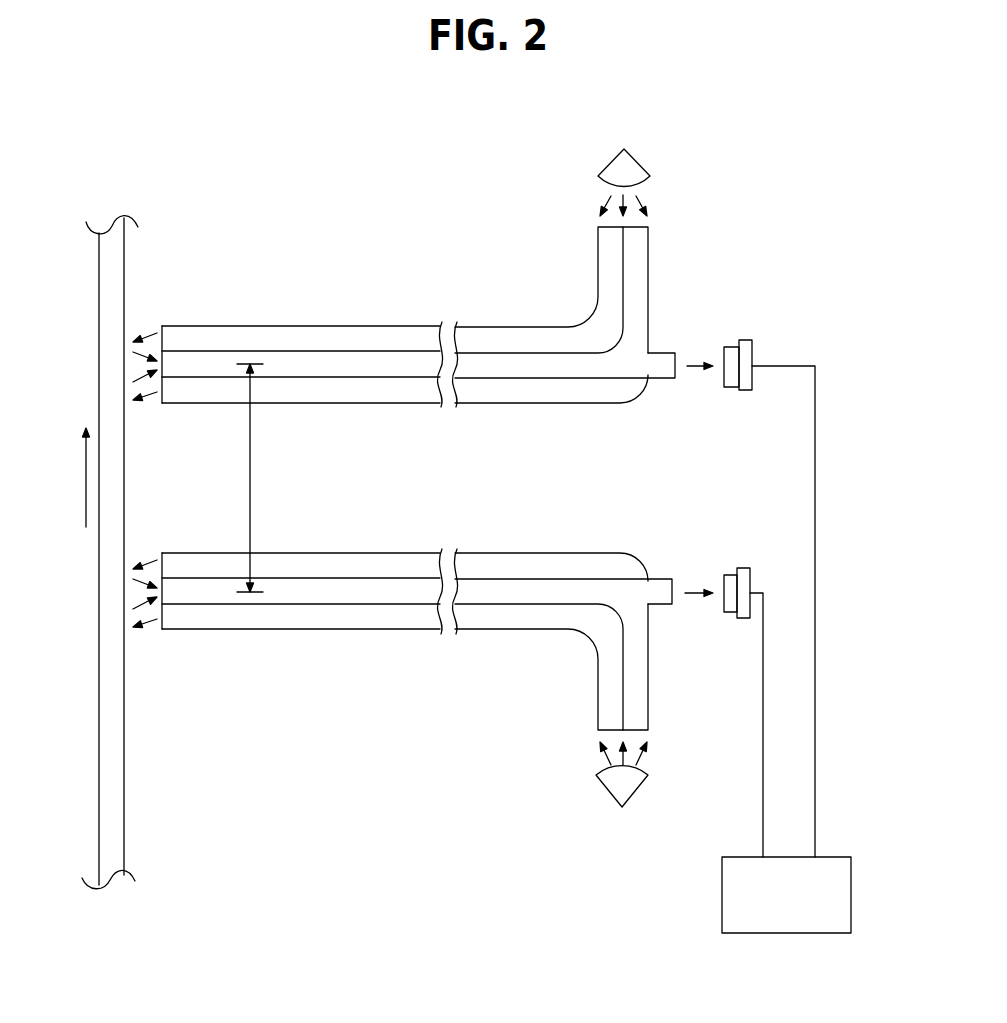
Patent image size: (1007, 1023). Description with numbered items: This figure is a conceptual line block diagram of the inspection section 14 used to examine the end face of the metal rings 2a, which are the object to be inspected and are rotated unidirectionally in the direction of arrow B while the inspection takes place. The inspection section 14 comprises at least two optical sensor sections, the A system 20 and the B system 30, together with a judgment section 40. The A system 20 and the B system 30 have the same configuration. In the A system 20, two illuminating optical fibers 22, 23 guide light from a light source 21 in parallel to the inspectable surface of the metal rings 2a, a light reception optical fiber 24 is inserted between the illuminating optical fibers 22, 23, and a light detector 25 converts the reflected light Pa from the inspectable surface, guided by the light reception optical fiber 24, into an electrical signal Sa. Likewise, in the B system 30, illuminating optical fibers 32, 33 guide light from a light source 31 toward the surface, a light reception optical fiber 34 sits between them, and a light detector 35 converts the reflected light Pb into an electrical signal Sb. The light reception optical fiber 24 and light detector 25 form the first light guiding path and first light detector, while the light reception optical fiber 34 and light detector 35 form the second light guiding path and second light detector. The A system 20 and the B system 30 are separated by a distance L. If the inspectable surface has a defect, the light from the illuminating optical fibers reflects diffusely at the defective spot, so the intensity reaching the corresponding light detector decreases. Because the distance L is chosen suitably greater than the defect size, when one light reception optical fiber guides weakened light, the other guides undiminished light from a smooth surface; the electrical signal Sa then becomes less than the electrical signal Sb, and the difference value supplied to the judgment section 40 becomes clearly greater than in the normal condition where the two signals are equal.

The metal rings 2a is at (123, 695).
The inspection section 14 is at (758, 193).
The A system optical inspection section 20 is at (292, 284).
The light source 21 is at (609, 165).
The illuminating optical fiber 22 is at (598, 297).
The illuminating optical fiber 23 is at (648, 286).
The light reception optical fiber 24 is at (550, 377).
The light detector 25 is at (742, 389).
The B system optical inspection section 30 is at (290, 677).
The light source 31 is at (612, 793).
The illuminating optical fiber 32 is at (598, 690).
The illuminating optical fiber 33 is at (648, 690).
The light reception optical fiber 34 is at (540, 579).
The light detector 35 is at (745, 568).
The judgment section 40 is at (778, 933).
The direction of rotation B is at (86, 466).
The distance L is at (250, 470).
The reflected light Pa is at (690, 366).
The reflected light Pb is at (688, 593).
The electrical signal Sa is at (815, 520).
The electrical signal Sb is at (763, 795).